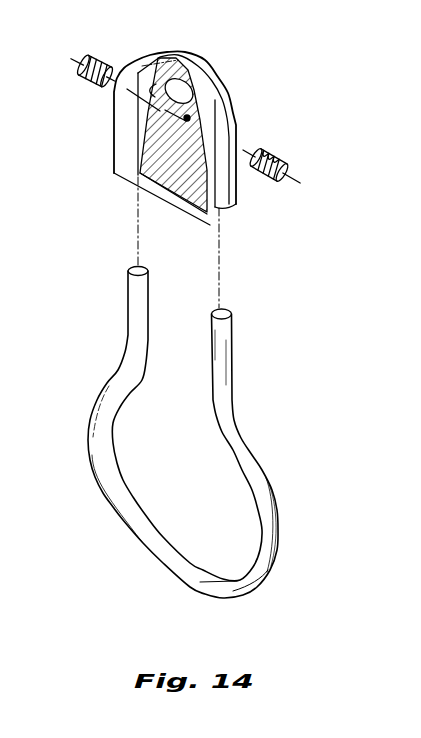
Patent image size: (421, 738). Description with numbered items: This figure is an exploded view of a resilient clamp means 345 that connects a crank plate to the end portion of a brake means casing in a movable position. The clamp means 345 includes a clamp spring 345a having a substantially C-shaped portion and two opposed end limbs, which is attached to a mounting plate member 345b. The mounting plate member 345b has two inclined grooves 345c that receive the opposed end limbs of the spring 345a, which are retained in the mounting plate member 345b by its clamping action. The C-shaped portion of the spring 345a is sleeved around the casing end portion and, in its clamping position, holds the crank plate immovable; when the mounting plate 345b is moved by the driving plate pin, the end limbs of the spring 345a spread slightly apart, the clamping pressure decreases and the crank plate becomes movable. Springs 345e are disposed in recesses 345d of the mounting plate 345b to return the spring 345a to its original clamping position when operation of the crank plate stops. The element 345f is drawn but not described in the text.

The resilient clamp means 345 is at (157, 387).
The clamp spring 345a is at (118, 380).
The mounting plate member 345b is at (207, 215).
The inclined grooves 345c is at (225, 195).
The recesses 345d is at (207, 122).
The springs 345e is at (287, 161).
The spring 345f is at (167, 57).